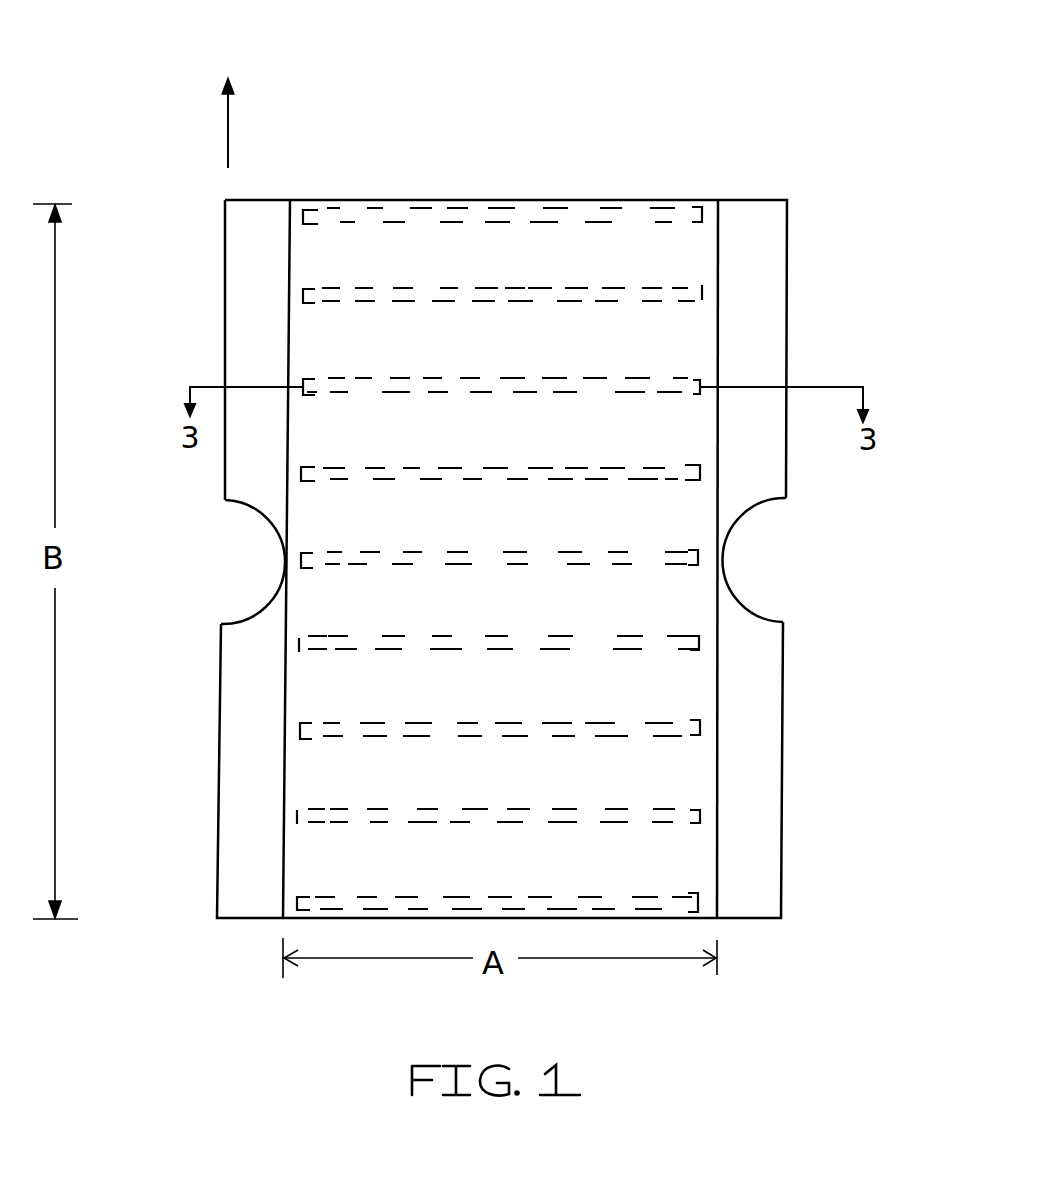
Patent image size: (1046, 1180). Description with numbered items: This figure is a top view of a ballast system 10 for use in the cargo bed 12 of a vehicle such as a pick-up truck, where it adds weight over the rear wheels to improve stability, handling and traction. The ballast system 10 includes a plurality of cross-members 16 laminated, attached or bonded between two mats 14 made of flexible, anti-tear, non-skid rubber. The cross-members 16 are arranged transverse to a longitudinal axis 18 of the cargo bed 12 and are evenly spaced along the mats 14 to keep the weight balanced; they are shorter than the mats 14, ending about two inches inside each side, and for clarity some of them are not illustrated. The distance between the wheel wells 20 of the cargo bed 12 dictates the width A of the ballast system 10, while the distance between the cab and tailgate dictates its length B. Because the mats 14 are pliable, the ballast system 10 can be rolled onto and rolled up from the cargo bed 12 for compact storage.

The ballast system 10 is at (640, 150).
The cargo bed 12 is at (772, 790).
The mats 14 is at (697, 353).
The cross-members 16 is at (300, 295).
The longitudinal axis 18 is at (224, 92).
The wheel wells 20 is at (251, 590).